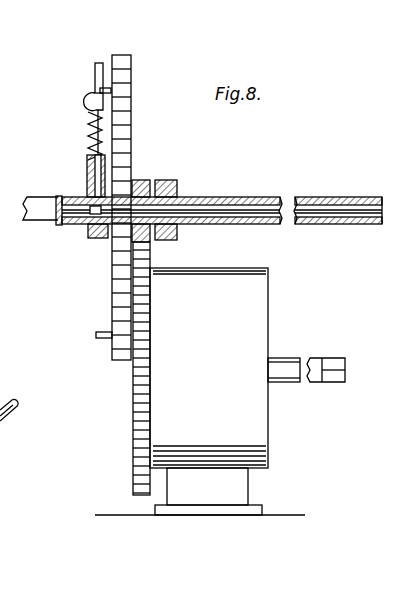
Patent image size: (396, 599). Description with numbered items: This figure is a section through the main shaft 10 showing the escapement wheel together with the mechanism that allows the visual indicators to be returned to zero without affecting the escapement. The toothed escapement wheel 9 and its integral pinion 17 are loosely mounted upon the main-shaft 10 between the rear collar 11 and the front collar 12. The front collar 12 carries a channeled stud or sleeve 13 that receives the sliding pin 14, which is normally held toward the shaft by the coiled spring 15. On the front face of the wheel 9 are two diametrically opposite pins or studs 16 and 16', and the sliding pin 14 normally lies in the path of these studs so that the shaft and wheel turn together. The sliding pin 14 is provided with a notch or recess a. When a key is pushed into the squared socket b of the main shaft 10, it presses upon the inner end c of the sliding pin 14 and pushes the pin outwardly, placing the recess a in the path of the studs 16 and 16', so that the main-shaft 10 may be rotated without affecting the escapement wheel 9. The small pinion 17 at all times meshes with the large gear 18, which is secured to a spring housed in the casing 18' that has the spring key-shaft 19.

The toothed escapement wheel 9 is at (124, 128).
The pin or stud 16 is at (112, 64).
The sliding pin 14 is at (94, 73).
The notch or recess a is at (100, 102).
The coiled spring 15 is at (92, 122).
The channeled stud or sleeve 13 is at (85, 160).
The main-shaft 10 is at (35, 196).
The squared socket b is at (230, 203).
The rear collar 11 is at (174, 191).
The pinion 17 is at (140, 181).
The inner end c is at (93, 212).
The front collar 12 is at (91, 237).
The large gear 18 is at (159, 368).
The casing 18' is at (200, 391).
The spring key-shaft 19 is at (283, 357).
The pin or stud 16' is at (91, 349).